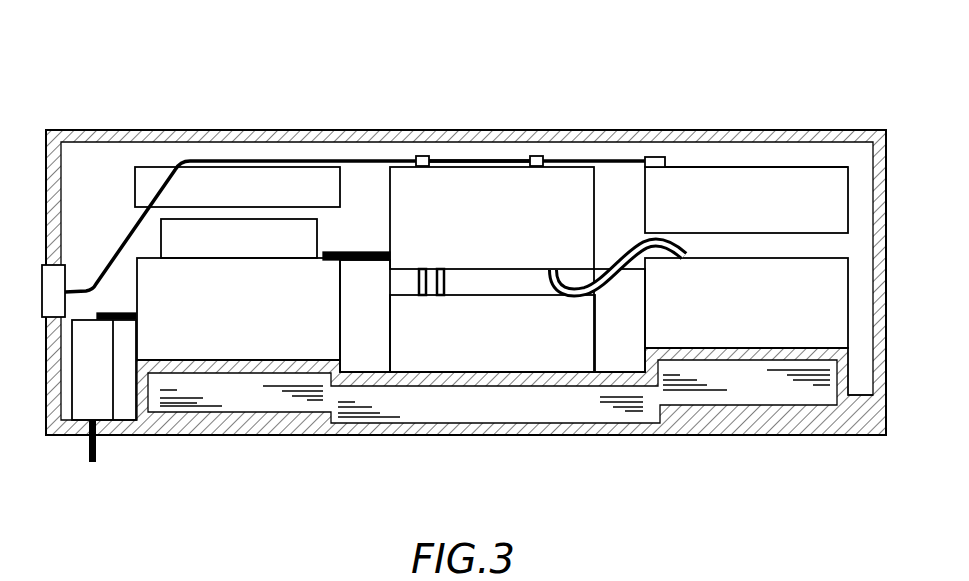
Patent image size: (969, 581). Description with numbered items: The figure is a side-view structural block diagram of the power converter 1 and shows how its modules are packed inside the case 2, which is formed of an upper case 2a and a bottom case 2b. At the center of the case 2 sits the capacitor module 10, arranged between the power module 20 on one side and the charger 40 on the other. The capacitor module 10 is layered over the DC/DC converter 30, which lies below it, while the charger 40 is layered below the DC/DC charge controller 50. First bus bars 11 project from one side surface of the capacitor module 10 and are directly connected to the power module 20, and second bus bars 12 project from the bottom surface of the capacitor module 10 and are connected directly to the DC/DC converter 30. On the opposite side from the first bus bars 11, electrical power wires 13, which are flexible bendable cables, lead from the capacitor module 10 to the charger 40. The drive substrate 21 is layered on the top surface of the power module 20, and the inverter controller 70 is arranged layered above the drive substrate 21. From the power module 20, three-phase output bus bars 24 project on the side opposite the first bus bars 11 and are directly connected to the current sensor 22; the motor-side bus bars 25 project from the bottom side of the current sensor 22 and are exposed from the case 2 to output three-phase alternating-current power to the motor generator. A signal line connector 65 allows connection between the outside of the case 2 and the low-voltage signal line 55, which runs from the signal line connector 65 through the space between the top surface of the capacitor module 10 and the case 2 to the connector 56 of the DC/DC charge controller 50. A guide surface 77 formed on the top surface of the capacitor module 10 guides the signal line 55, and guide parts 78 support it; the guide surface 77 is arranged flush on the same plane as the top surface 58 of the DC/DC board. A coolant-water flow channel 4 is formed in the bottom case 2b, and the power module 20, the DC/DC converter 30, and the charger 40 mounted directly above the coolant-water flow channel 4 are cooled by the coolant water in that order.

The power converter 1 is at (765, 84).
The case 2 is at (838, 128).
The upper case 2a is at (205, 128).
The bottom case 2b is at (183, 435).
The coolant-water flow channel 4 is at (473, 435).
The capacitor module 10 is at (492, 218).
The first bus bars 11 is at (363, 252).
The second bus bars 12 is at (406, 284).
The electrical power wires 13 is at (624, 235).
The power module 20 is at (238, 309).
The drive substrate 21 is at (239, 238).
The current sensor 22 is at (104, 370).
The output bus bars 24 is at (107, 313).
The motor-side bus bars 25 is at (97, 448).
The DC/DC converter 30 is at (492, 316).
The charger 40 is at (746, 303).
The DC/DC charge controller 50 is at (746, 200).
The signal line 55 is at (357, 158).
The connector 56 is at (653, 157).
The top surface 58 is at (718, 166).
The signal line connector 65 is at (63, 265).
The inverter controller 70 is at (237, 187).
The guide surface 77 is at (474, 159).
The guide parts 78 is at (418, 155).